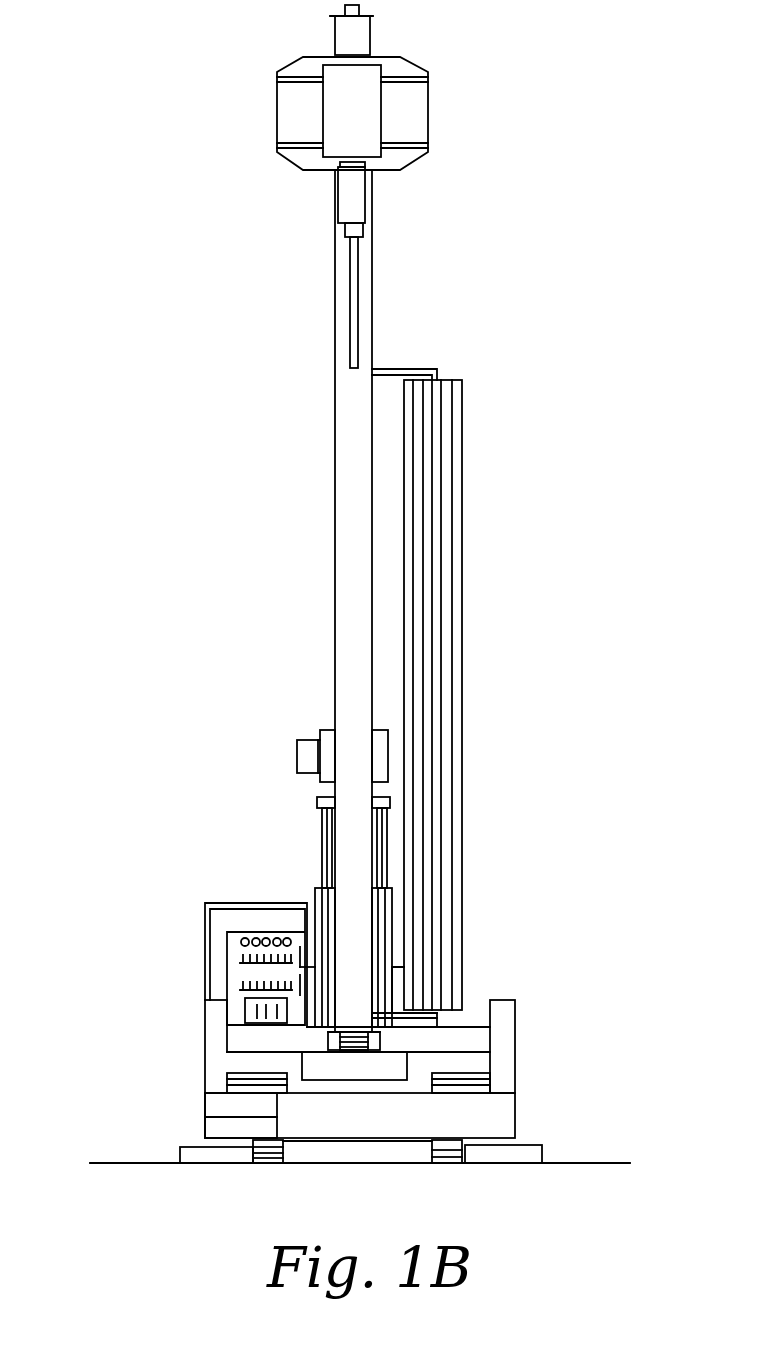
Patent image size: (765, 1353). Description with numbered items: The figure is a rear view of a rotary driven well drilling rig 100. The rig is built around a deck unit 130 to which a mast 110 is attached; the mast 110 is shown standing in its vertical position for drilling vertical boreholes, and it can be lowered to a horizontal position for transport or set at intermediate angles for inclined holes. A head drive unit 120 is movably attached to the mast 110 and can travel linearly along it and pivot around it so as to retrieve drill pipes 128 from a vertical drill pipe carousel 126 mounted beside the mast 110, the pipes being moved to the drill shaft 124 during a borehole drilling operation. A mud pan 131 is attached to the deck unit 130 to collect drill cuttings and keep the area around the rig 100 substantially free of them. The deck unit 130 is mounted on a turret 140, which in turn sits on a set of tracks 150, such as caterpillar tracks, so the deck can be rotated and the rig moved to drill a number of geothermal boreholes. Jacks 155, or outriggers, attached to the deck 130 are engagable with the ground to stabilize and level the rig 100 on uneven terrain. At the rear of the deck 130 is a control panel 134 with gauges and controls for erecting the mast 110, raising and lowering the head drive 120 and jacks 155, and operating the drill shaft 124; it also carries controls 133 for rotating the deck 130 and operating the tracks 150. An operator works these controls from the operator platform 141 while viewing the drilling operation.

The rotary driven well drilling rig 100 is at (92, 58).
The mast 110 is at (345, 538).
The head drive unit 120 is at (452, 102).
The drill shaft 124 is at (350, 305).
The drill pipe carousel 126 is at (452, 364).
The drill pipes 128 is at (462, 592).
The deck unit 130 is at (480, 1033).
The mud pan 131 is at (515, 1112).
The controls 133 is at (245, 1018).
The control panel 134 is at (237, 950).
The turret 140 is at (365, 1075).
The operator platform 141 is at (205, 1128).
The tracks 150 is at (270, 1163).
The jacks 155 is at (507, 1143).